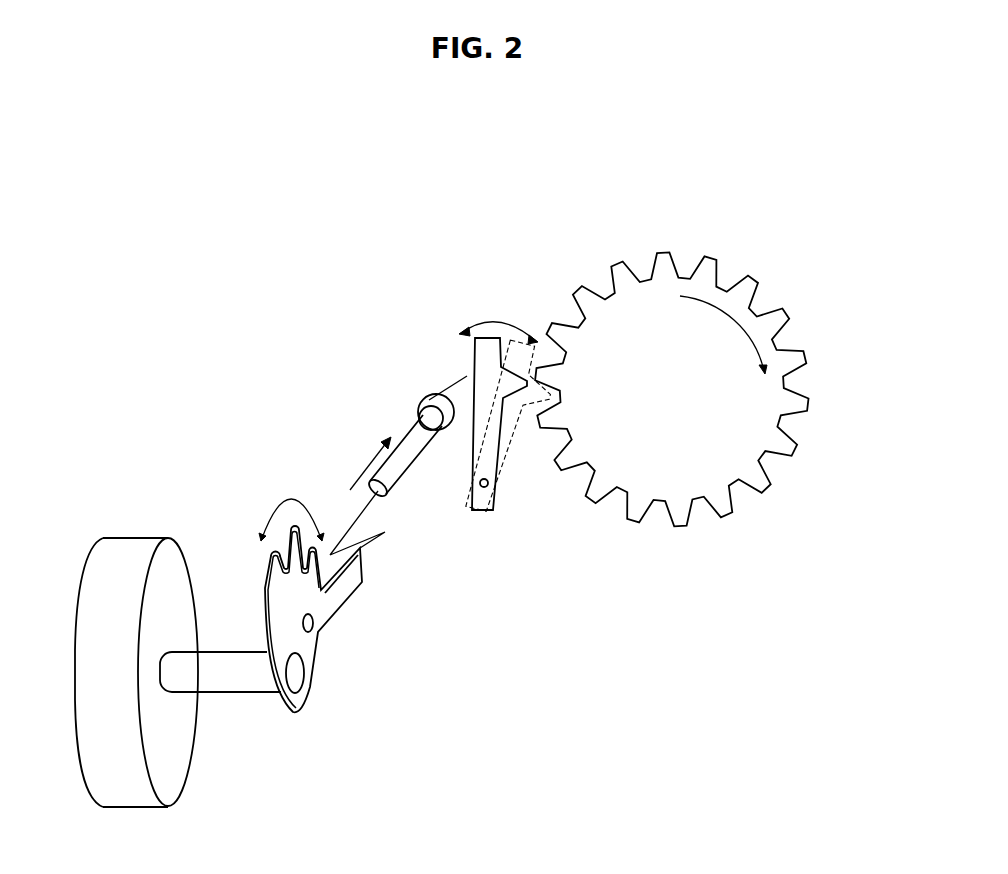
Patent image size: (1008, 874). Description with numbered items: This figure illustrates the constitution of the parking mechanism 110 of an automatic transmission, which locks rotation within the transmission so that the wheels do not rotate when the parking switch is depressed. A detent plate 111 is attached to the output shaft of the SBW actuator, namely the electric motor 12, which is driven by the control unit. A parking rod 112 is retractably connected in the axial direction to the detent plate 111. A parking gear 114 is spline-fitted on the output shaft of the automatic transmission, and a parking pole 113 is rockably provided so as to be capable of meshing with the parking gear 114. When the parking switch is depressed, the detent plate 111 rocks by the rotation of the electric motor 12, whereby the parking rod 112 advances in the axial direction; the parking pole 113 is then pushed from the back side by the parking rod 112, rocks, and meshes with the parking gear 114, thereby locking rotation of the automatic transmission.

The electric motor 12 is at (148, 537).
The parking mechanism 110 is at (410, 217).
The detent plate 111 is at (314, 662).
The parking rod 112 is at (413, 470).
The parking pole 113 is at (500, 505).
The parking gear 114 is at (789, 316).